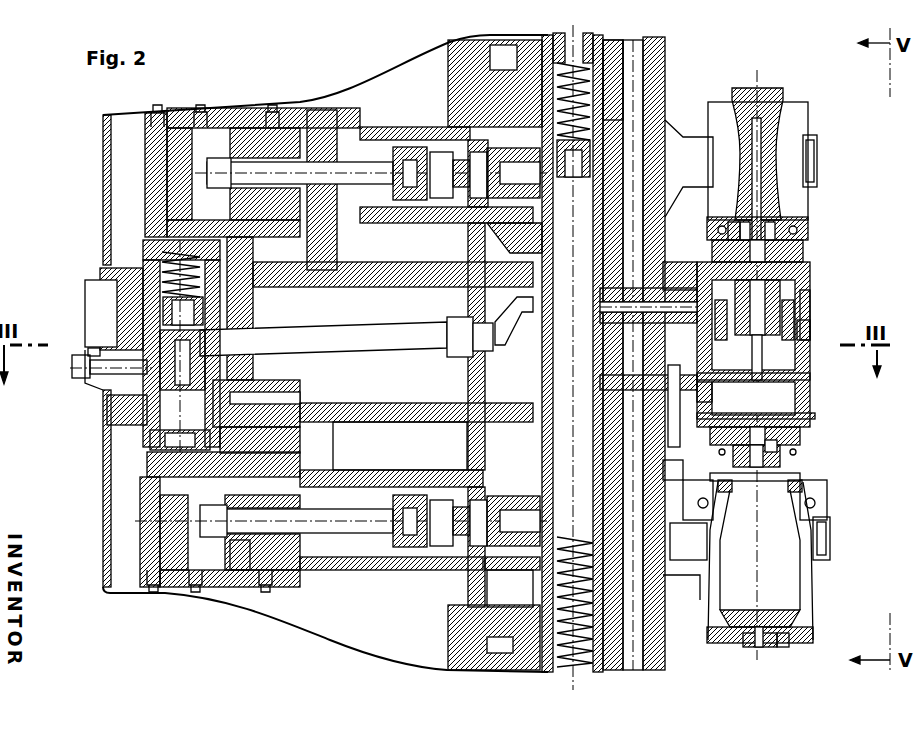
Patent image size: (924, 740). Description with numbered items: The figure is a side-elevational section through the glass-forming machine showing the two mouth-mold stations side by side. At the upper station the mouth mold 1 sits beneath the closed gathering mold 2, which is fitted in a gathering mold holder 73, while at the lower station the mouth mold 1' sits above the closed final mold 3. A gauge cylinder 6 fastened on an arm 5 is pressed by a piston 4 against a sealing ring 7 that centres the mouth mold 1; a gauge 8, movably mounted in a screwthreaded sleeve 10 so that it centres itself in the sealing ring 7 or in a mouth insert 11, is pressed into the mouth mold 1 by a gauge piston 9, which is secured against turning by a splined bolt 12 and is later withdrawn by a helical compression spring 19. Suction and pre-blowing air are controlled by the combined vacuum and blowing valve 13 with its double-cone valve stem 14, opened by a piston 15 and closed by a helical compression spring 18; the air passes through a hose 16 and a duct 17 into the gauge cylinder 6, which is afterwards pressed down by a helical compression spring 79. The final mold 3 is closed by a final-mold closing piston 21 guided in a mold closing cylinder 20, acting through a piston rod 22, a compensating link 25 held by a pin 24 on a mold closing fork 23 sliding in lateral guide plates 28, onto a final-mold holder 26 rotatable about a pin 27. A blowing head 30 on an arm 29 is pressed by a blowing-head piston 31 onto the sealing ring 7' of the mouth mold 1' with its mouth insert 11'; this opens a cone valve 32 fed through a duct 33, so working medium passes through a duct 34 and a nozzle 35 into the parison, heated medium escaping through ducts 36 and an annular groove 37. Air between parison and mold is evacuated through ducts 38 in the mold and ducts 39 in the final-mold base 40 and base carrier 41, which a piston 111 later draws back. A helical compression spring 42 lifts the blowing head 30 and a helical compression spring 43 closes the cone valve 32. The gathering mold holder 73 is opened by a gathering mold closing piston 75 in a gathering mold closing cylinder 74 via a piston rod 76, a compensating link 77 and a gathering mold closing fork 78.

The mouth mold 1 is at (748, 284).
The mouth mold 1' is at (787, 480).
The gathering mold 2 is at (802, 202).
The final mold 3 is at (807, 612).
The piston 4 is at (663, 45).
The arm 5 is at (682, 290).
The gauge cylinder 6 is at (808, 280).
The sealing ring 7 is at (740, 278).
The sealing ring 7' is at (792, 459).
The gauge 8 is at (760, 225).
The gauge piston 9 is at (812, 326).
The screwthreaded sleeve 10 is at (790, 247).
The mouth insert 11 is at (727, 207).
The mouth insert 11' is at (780, 500).
The splined bolt 12 is at (763, 355).
The combined vacuum and blowing valve 13 is at (133, 387).
The double-cone valve stem 14 is at (88, 348).
The piston 15 is at (140, 300).
The hose 16 is at (402, 337).
The duct 17 is at (643, 307).
The helical compression spring 18 is at (110, 255).
The helical compression spring 19 is at (812, 298).
The mold closing cylinder 20 is at (213, 578).
The final-mold closing piston 21 is at (238, 558).
The piston rod 22 is at (368, 525).
The mold closing fork 23 is at (502, 550).
The pin 24 is at (433, 473).
The compensating link 25 is at (460, 535).
The final-mold holder 26 is at (670, 473).
The pin 27 is at (643, 612).
The lateral guide plates 28 is at (523, 550).
The arm 29 is at (810, 392).
The blowing head 30 is at (810, 440).
The blowing-head piston 31 is at (610, 652).
The cone valve 32 is at (670, 380).
The duct 33 is at (620, 388).
The duct 34 is at (810, 413).
The nozzle 35 is at (773, 440).
The ducts 36 is at (747, 473).
The annular groove 37 is at (743, 433).
The ducts 38 is at (800, 588).
The ducts 39 is at (772, 610).
The final-mold base 40 is at (727, 642).
The base carrier 41 is at (773, 643).
The helical compression spring 42 is at (570, 533).
The helical compression spring 43 is at (692, 373).
The gathering mold holder 73 is at (815, 143).
The gathering mold closing cylinder 74 is at (220, 127).
The gathering mold closing piston 75 is at (250, 127).
The piston rod 76 is at (353, 168).
The compensating link 77 is at (460, 160).
The gathering mold closing fork 78 is at (500, 160).
The helical compression spring 79 is at (665, 90).
The piston 111 is at (757, 645).